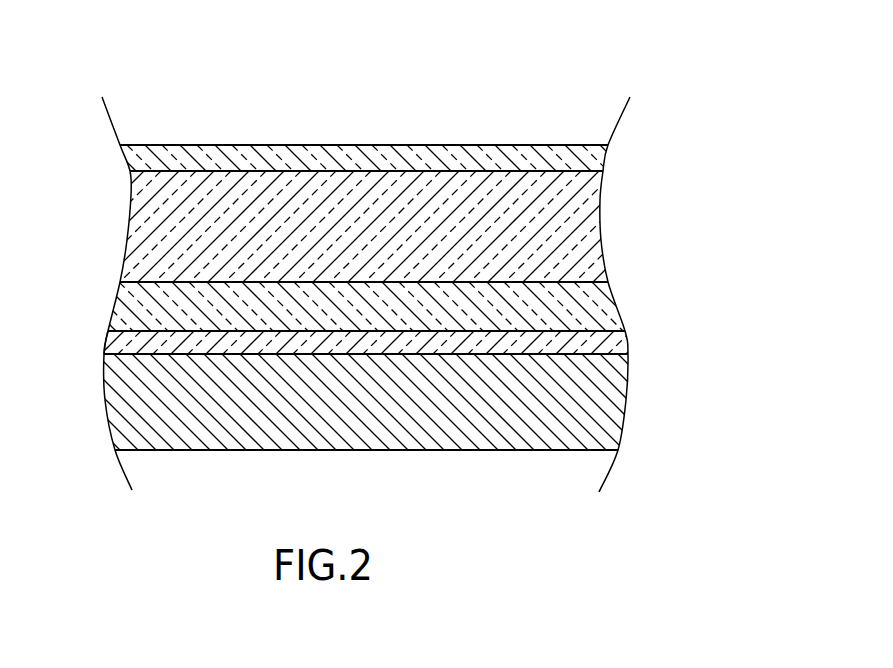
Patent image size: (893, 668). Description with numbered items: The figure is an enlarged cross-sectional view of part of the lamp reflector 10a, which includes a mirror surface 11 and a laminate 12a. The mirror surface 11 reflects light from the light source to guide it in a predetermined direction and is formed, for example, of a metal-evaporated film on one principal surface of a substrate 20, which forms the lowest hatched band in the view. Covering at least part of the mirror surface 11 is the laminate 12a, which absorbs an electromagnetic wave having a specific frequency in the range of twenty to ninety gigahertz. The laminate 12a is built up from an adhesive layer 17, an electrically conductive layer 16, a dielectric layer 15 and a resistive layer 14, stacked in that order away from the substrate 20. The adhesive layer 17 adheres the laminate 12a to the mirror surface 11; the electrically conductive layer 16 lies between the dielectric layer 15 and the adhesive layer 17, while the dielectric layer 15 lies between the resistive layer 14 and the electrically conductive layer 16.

The lamp reflector 10a is at (570, 107).
The mirror surface 11 is at (108, 337).
The laminate 12a is at (697, 140).
The resistive layer 14 is at (590, 158).
The dielectric layer 15 is at (587, 224).
The electrically conductive layer 16 is at (588, 305).
The adhesive layer 17 is at (595, 342).
The substrate 20 is at (590, 407).